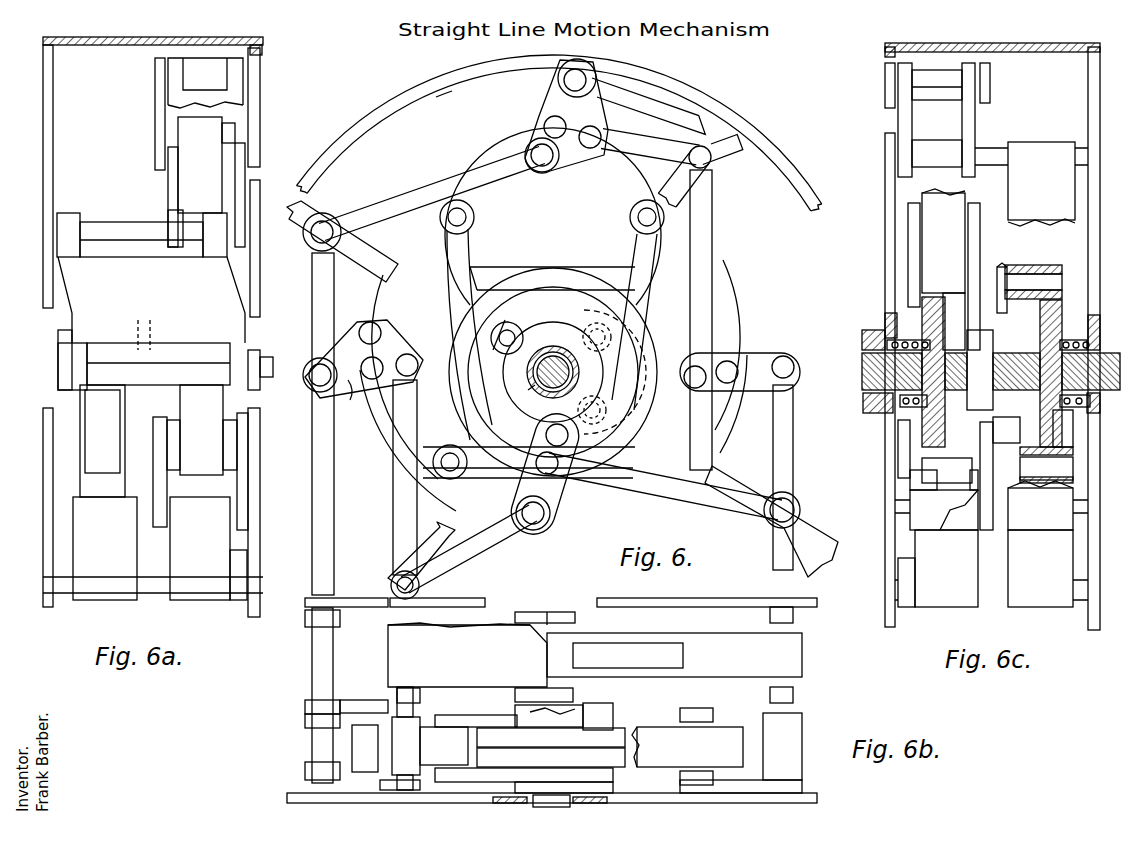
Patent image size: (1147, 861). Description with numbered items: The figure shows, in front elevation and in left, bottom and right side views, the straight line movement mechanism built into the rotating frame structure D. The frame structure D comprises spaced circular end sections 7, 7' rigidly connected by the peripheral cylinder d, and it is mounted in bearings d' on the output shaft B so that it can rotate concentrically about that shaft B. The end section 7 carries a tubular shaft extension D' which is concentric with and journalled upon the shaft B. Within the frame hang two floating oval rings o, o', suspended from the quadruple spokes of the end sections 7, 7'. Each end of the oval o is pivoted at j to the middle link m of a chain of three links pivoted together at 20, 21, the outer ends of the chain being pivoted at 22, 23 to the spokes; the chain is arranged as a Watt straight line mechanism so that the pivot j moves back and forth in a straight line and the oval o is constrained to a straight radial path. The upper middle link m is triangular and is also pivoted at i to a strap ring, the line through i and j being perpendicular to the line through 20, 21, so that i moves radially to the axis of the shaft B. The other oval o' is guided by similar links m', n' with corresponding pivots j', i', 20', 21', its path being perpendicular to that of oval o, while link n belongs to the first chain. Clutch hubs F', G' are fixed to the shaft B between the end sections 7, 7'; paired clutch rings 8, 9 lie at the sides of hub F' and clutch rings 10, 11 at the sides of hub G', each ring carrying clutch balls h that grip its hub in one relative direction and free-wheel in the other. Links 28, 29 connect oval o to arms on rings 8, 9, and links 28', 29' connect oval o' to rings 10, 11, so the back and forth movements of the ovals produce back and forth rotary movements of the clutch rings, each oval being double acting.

In FIG. 6, the peripheral cylinder d is at (559, 133).
In FIG. 6C, the peripheral cylinder d is at (1043, 62).
In FIG. 6, the bearings d' is at (441, 96).
In FIG. 6, the circular end section 7 is at (562, 395).
In FIG. 6A, the circular end section 7 is at (267, 398).
In FIG. 6C, the circular end section 7 is at (877, 380).
In FIG. 6B, the circular end section 7 is at (561, 591).
In FIG. 6A, the circular end section 7' is at (35, 326).
In FIG. 6C, the circular end section 7' is at (1106, 338).
In FIG. 6B, the circular end section 7' is at (570, 797).
In FIG. 6, the clutch ring 8 is at (520, 336).
In FIG. 6C, the clutch ring 8 is at (922, 428).
In FIG. 6C, the clutch ring 9 is at (980, 370).
In FIG. 6C, the clutch ring 10 is at (1006, 430).
In FIG. 6B, the clutch ring 10 is at (551, 737).
In FIG. 6C, the clutch ring 11 is at (1054, 427).
In FIG. 6B, the clutch ring 11 is at (551, 757).
In FIG. 6, the pivot 20 is at (537, 351).
In FIG. 6A, the pivot 20 is at (263, 370).
In FIG. 6C, the pivot 20 is at (991, 493).
In FIG. 6B, the pivot 20 is at (614, 743).
In FIG. 6, the pivot 20' is at (567, 370).
In FIG. 6, the pivot 21 is at (567, 286).
In FIG. 6A, the pivot 21 is at (226, 270).
In FIG. 6C, the pivot 21 is at (937, 85).
In FIG. 6B, the pivot 21 is at (800, 734).
In FIG. 6, the pivot 21' is at (567, 389).
In FIG. 6B, the pivot 21' is at (300, 695).
In FIG. 6, the pivot 22 is at (326, 222).
In FIG. 6A, the pivot 22 is at (110, 220).
In FIG. 6B, the pivot 22 is at (412, 697).
In FIG. 6, the pivot 23 is at (712, 170).
In FIG. 6C, the pivot 23 is at (900, 512).
In FIG. 6, the link 28 is at (471, 320).
In FIG. 6C, the link 28 is at (885, 248).
In FIG. 6, the link 28' is at (450, 447).
In FIG. 6C, the link 28' is at (1004, 279).
In FIG. 6B, the link 28' is at (476, 708).
In FIG. 6, the link 29 is at (631, 305).
In FIG. 6C, the link 29 is at (985, 265).
In FIG. 6, the link 29' is at (596, 323).
In FIG. 6C, the link 29' is at (1075, 466).
In FIG. 6B, the link 29' is at (524, 793).
In FIG. 6, the output shaft B is at (575, 372).
In FIG. 6C, the output shaft B is at (1115, 392).
In FIG. 6, the frame structure D is at (715, 166).
In FIG. 6, the tubular shaft extension D' is at (520, 400).
In FIG. 6C, the tubular shaft extension D' is at (848, 333).
In FIG. 6C, the clutch hub F' is at (897, 372).
In FIG. 6C, the clutch hub G' is at (1083, 372).
In FIG. 6, the link e is at (432, 370).
In FIG. 6A, the link e is at (211, 185).
In FIG. 6C, the link e is at (946, 568).
In FIG. 6B, the link e is at (467, 655).
In FIG. 6, the guide rail e' is at (551, 372).
In FIG. 6A, the guide rail e' is at (151, 548).
In FIG. 6C, the guide rail e' is at (1031, 374).
In FIG. 6B, the guide rail e' is at (386, 753).
In FIG. 6C, the clutch balls h is at (997, 470).
In FIG. 6, the pivot i is at (566, 116).
In FIG. 6, the pivot i' is at (552, 454).
In FIG. 6A, the pivot i' is at (266, 377).
In FIG. 6, the pivot j is at (568, 319).
In FIG. 6, the pivot j' is at (560, 372).
In FIG. 6, the middle link m is at (561, 348).
In FIG. 6A, the middle link m is at (208, 300).
In FIG. 6C, the middle link m is at (932, 274).
In FIG. 6B, the middle link m is at (563, 647).
In FIG. 6, the middle link m' is at (540, 386).
In FIG. 6A, the middle link m' is at (154, 356).
In FIG. 6B, the middle link m' is at (550, 707).
In FIG. 6, the link n is at (663, 299).
In FIG. 6A, the link n is at (159, 268).
In FIG. 6C, the link n is at (953, 296).
In FIG. 6B, the link n is at (674, 655).
In FIG. 6, the link n' is at (570, 424).
In FIG. 6A, the link n' is at (167, 305).
In FIG. 6C, the link n' is at (1040, 505).
In FIG. 6B, the link n' is at (307, 695).
In FIG. 6, the floating oval ring o is at (553, 319).
In FIG. 6A, the floating oval ring o is at (200, 296).
In FIG. 6C, the floating oval ring o is at (943, 269).
In FIG. 6B, the floating oval ring o is at (628, 655).
In FIG. 6, the floating oval ring o' is at (529, 357).
In FIG. 6A, the floating oval ring o' is at (102, 441).
In FIG. 6C, the floating oval ring o' is at (1063, 374).
In FIG. 6B, the floating oval ring o' is at (581, 747).